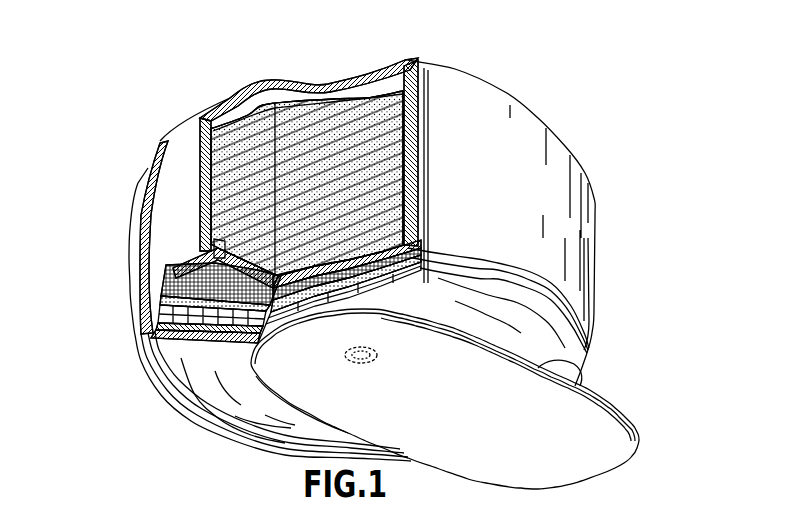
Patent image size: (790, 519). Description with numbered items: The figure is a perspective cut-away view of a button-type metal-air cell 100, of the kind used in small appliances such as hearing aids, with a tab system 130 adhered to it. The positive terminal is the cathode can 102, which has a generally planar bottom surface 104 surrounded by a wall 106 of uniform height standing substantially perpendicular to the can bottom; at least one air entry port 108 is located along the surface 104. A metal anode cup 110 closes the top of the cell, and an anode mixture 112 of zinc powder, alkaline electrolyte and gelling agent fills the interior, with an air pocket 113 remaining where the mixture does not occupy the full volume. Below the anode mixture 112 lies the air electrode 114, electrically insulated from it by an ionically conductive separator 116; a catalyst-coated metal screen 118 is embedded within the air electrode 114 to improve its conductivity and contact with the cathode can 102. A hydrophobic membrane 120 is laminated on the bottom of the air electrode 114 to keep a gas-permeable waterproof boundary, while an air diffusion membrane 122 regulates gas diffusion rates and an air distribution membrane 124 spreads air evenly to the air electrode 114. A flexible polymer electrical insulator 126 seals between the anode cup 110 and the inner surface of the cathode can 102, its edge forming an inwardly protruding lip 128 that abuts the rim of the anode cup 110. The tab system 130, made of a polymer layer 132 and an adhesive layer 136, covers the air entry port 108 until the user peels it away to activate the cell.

The metal-air cell 100 is at (215, 56).
The cathode can 102 is at (152, 133).
The surface 104 is at (197, 378).
The wall 106 is at (570, 210).
The air entry port 108 is at (350, 357).
The anode cup 110 is at (240, 92).
The anode mixture 112 is at (362, 91).
The air pocket 113 is at (337, 85).
The air electrode 114 is at (152, 278).
The ionically conductive separator 116 is at (212, 250).
The metal screen 118 is at (205, 283).
The hydrophobic membrane 120 is at (175, 300).
The air diffusion membrane 122 is at (147, 318).
The air distribution membrane 124 is at (148, 328).
The electrical insulator 126 is at (192, 185).
The inwardly protruding lip 128 is at (207, 235).
The tab system 130 is at (641, 430).
The polymer layer 132 is at (600, 390).
The adhesive layer 136 is at (580, 358).